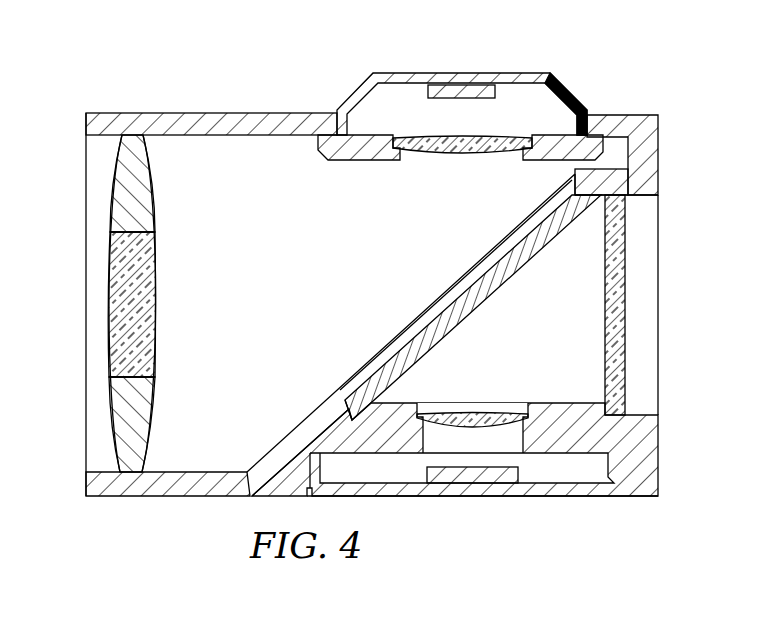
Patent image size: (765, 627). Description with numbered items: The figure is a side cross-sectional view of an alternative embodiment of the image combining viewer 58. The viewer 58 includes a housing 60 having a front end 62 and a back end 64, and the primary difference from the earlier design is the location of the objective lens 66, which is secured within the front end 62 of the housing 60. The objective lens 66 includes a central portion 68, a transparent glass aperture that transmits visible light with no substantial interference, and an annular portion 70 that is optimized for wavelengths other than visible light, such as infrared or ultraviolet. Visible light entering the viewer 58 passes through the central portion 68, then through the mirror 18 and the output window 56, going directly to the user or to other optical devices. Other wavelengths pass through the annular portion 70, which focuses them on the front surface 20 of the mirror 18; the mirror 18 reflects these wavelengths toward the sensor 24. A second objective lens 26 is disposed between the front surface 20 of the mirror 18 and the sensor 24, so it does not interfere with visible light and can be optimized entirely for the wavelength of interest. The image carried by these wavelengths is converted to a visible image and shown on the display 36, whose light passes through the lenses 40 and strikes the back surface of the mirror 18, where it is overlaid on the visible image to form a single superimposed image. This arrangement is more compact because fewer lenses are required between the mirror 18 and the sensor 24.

The mirror 18 is at (443, 312).
The front surface of the mirror 20 is at (466, 290).
The sensor 24 is at (460, 74).
The objective lens 26 is at (468, 137).
The display 36 is at (519, 476).
The lenses 40 is at (484, 412).
The output window 56 is at (605, 310).
The image combining viewer 58 is at (522, 512).
The housing 60 is at (172, 121).
The front end of the housing 62 is at (86, 488).
The back end of the housing 64 is at (660, 146).
The objective lens 66 is at (181, 303).
The central portion 68 is at (155, 300).
The annular portion 70 is at (130, 180).